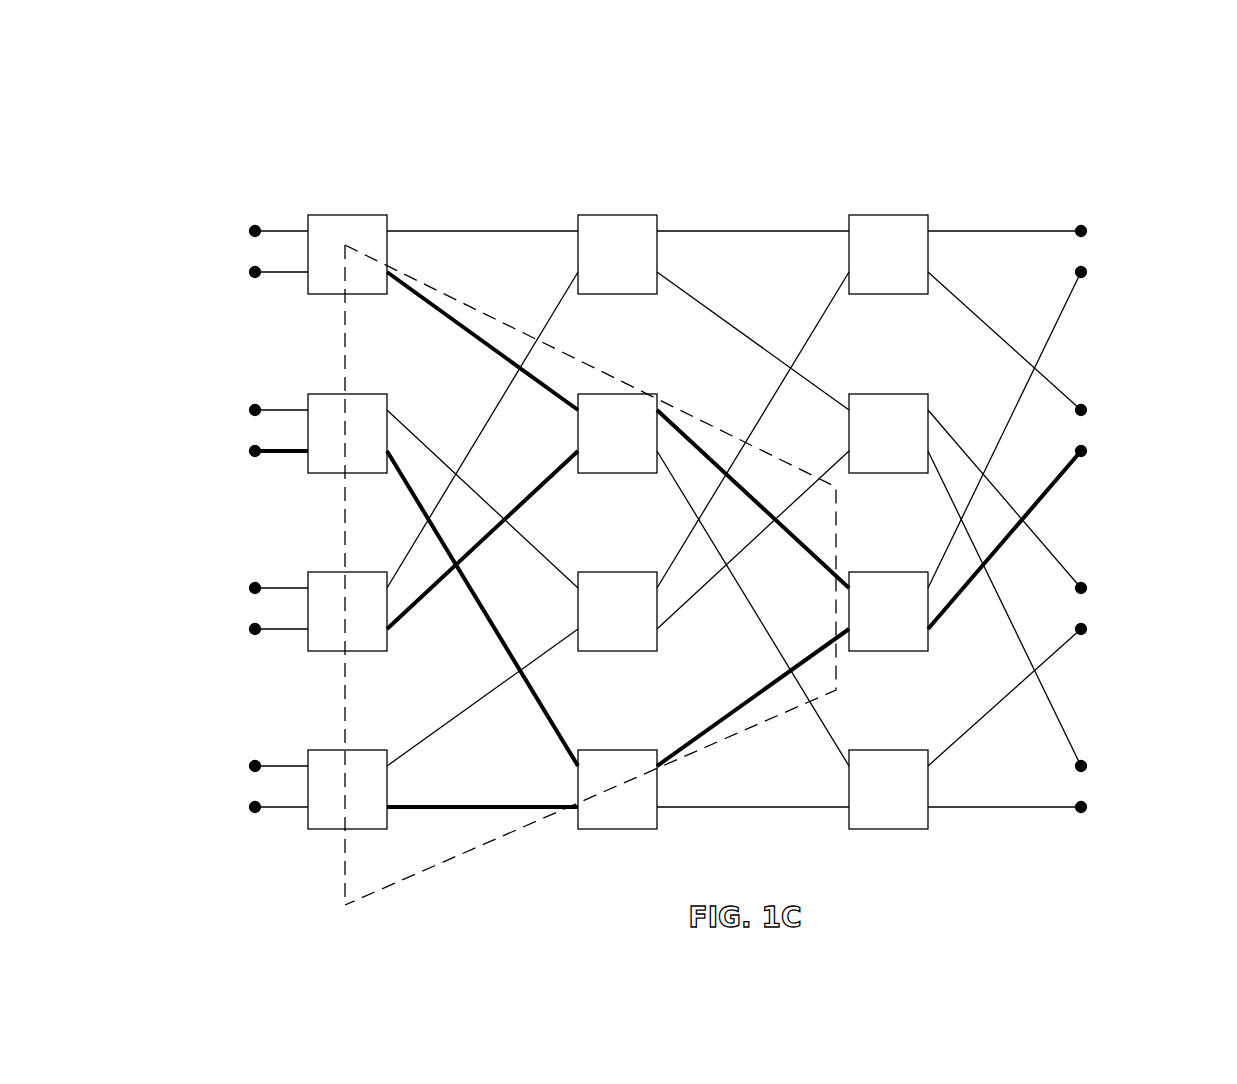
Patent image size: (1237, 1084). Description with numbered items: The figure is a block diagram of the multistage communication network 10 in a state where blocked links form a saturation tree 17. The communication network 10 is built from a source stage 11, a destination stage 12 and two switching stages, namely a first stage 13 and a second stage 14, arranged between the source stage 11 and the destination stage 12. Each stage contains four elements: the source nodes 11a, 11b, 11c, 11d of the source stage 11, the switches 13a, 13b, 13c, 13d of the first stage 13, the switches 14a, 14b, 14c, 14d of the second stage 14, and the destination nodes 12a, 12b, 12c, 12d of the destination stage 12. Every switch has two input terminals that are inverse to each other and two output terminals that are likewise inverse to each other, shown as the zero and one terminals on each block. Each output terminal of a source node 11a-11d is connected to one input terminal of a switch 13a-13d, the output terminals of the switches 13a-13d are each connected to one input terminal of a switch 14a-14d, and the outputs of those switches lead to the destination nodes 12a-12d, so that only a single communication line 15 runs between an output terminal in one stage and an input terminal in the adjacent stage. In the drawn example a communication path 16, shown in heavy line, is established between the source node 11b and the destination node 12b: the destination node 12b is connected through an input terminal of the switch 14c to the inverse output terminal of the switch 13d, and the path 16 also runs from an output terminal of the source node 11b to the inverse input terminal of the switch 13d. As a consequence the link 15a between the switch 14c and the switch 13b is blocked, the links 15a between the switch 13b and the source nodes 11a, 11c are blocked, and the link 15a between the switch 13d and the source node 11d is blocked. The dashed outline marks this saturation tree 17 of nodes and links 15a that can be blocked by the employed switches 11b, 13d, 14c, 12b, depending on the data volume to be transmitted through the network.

The communication network 10 is at (189, 126).
The source stage 11 is at (297, 152).
The source node 11a is at (325, 295).
The source node 11b is at (325, 474).
The source node 11c is at (325, 652).
The source node 11d is at (325, 830).
The destination stage 12 is at (1078, 152).
The destination node 12a is at (1156, 218).
The destination node 12b is at (1156, 397).
The destination node 12c is at (1156, 575).
The destination node 12d is at (1156, 753).
The first stage 13 is at (663, 152).
The switch 13a is at (620, 295).
The switch 13b is at (620, 474).
The switch 13c is at (620, 652).
The switch 13d is at (620, 830).
The second stage 14 is at (938, 152).
The switch 14a is at (908, 295).
The switch 14b is at (908, 474).
The switch 14c is at (908, 652).
The switch 14d is at (908, 830).
The communication line 15 is at (1065, 305).
The link 15a is at (497, 345).
The communication path 16 is at (482, 614).
The saturation tree 17 is at (440, 290).